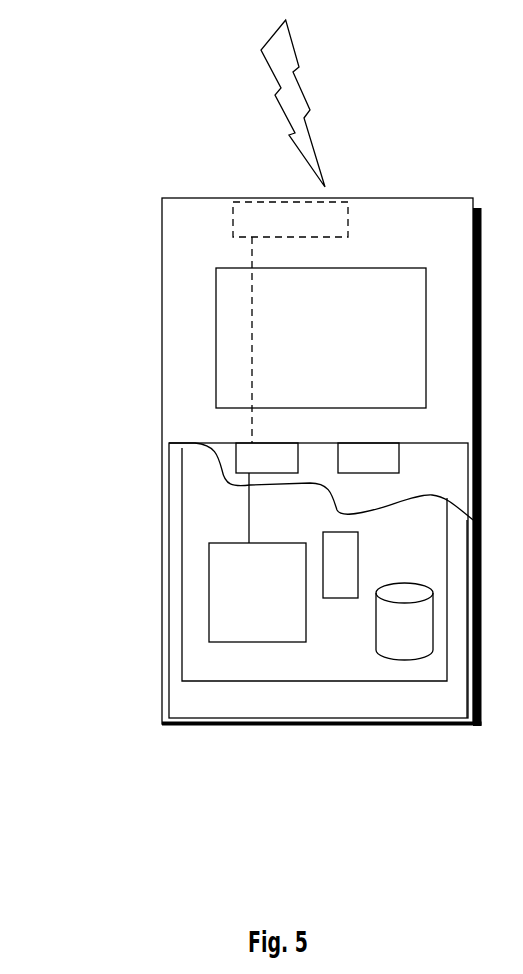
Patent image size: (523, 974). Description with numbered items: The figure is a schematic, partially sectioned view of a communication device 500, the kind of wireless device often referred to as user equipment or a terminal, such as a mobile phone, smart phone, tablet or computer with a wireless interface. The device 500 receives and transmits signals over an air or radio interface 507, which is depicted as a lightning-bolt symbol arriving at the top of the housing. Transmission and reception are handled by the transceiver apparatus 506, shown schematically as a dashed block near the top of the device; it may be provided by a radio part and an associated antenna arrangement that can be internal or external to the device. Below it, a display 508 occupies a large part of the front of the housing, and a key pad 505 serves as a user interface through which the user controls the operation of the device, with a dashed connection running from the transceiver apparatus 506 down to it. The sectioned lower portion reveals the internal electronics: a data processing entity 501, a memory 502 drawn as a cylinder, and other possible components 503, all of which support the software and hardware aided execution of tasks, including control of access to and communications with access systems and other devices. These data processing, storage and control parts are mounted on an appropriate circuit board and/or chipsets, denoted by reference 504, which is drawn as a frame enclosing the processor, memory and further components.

The communication device 500 is at (162, 241).
The data processing entity 501 is at (216, 576).
The memory 502 is at (397, 635).
The other possible components 503 is at (340, 548).
The circuit board 504 is at (208, 662).
The key pad 505 is at (240, 458).
The transceiver apparatus 506 is at (338, 212).
The air or radio interface 507 is at (324, 128).
The display 508 is at (233, 325).